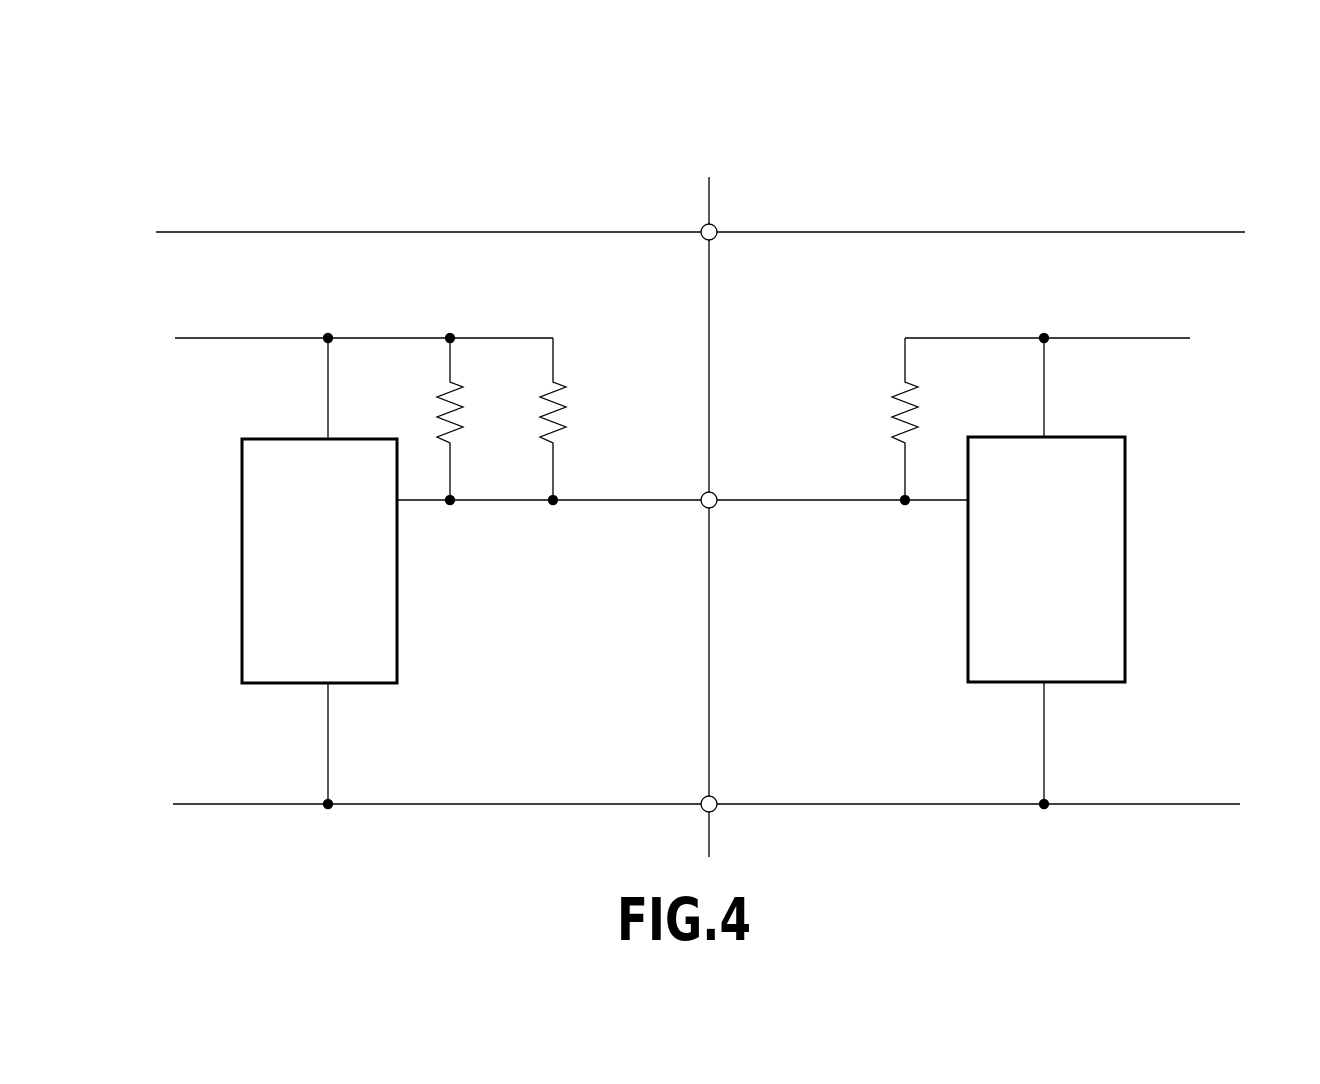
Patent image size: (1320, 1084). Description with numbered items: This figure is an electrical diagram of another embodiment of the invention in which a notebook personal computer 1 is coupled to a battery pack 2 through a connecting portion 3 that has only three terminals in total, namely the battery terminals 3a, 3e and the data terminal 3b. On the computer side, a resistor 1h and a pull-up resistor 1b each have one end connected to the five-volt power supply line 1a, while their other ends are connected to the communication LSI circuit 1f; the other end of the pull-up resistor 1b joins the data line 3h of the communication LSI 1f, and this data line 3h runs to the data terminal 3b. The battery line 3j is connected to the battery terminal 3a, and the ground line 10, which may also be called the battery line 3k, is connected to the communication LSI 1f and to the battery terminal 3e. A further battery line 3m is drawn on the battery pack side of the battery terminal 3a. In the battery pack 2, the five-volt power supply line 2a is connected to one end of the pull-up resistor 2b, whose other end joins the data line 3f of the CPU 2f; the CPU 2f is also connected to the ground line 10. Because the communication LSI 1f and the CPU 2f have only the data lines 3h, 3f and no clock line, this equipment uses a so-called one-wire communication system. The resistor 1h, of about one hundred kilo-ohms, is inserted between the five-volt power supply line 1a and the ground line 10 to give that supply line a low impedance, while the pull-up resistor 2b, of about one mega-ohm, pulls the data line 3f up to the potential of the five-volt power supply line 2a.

The notebook personal computer 1 is at (335, 218).
The 5V power supply line 1a is at (207, 338).
The pull-up resistor 1b is at (566, 385).
The LSI circuit for communication 1f is at (288, 685).
The resistor 1h is at (440, 412).
The battery pack 2 is at (977, 215).
The 5V power supply line 2a is at (1126, 336).
The pull-up resistor 2b is at (915, 392).
The CPU 2f is at (1088, 684).
The connecting portion 3 is at (720, 510).
The battery terminal 3a is at (702, 226).
The data terminal 3b is at (718, 494).
The battery terminal 3e is at (702, 812).
The data line 3f is at (808, 502).
The data line 3h is at (626, 502).
The battery line 3j is at (444, 232).
The battery line 3k is at (417, 806).
The Batt+ line to control unit 3m is at (1125, 231).
The ground line 10 is at (985, 806).